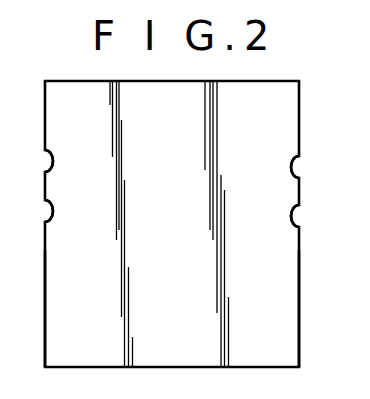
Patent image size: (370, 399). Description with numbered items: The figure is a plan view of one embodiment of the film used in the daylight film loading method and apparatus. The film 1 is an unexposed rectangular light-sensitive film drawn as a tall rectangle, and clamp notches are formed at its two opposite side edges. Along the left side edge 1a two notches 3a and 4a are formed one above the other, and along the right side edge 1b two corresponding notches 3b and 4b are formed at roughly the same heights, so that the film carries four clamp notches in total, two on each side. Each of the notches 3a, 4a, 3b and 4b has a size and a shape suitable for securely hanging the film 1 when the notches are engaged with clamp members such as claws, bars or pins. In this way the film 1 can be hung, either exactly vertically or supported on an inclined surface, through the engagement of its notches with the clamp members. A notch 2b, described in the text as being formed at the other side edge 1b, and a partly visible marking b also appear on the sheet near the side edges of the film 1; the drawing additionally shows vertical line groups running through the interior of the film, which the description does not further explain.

The film 1 is at (208, 357).
The side edge 1a is at (45, 342).
The other side edge 1b is at (299, 318).
The notch 2b is at (66, 224).
The electrode strip b is at (114, 224).
The notch 3a is at (49, 165).
The notch 3b is at (294, 166).
The notch 4a is at (49, 213).
The notch 4b is at (294, 213).